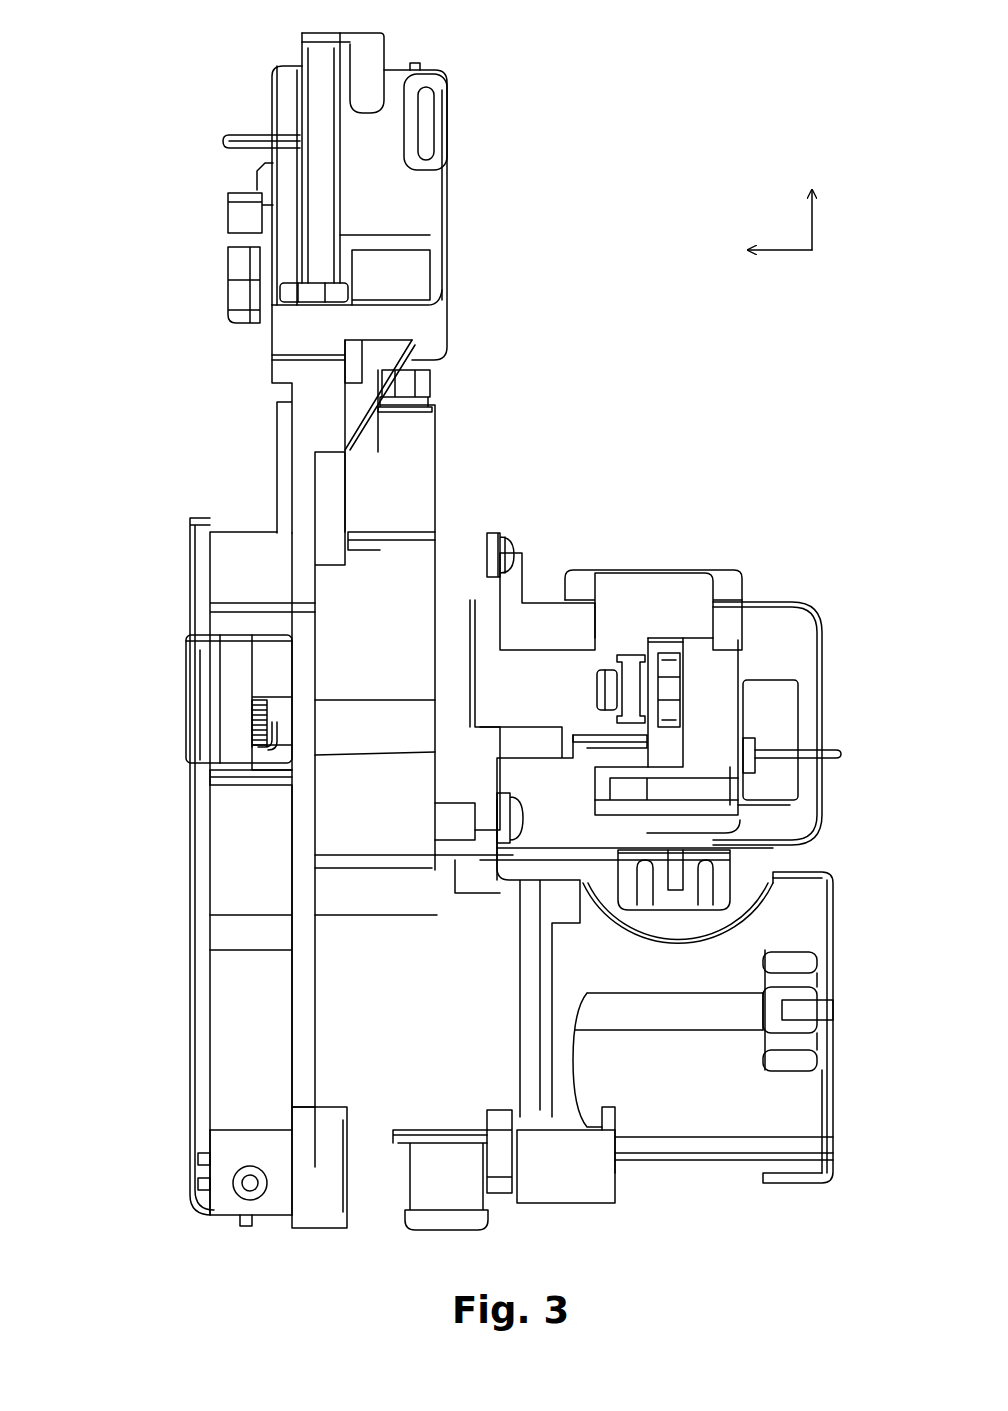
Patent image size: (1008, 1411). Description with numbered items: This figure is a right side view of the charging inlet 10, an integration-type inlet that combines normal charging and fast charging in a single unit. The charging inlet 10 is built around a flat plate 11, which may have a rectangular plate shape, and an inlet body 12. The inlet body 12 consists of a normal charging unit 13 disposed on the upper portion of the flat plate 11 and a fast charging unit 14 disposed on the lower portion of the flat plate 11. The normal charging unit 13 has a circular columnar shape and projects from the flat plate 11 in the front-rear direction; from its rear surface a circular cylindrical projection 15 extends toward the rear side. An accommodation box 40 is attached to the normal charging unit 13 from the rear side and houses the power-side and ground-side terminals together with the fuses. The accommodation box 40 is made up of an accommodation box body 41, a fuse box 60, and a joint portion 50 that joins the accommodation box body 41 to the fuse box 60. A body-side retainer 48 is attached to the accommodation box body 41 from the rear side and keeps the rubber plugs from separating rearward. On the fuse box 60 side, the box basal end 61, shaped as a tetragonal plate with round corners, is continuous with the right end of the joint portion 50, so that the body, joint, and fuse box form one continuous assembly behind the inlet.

The charging inlet 10 is at (140, 86).
The flat plate 11 is at (305, 1155).
The inlet body 12 is at (99, 1011).
The normal charging unit 13 is at (165, 707).
The fast charging unit 14 is at (165, 1000).
The circular cylindrical projection 15 is at (454, 595).
The accommodation box 40 is at (636, 450).
The accommodation box body 41 is at (545, 670).
The body-side retainer 48 is at (668, 585).
The joint portion 50 is at (782, 720).
The fuse box 60 is at (787, 675).
The box basal end 61 is at (777, 642).